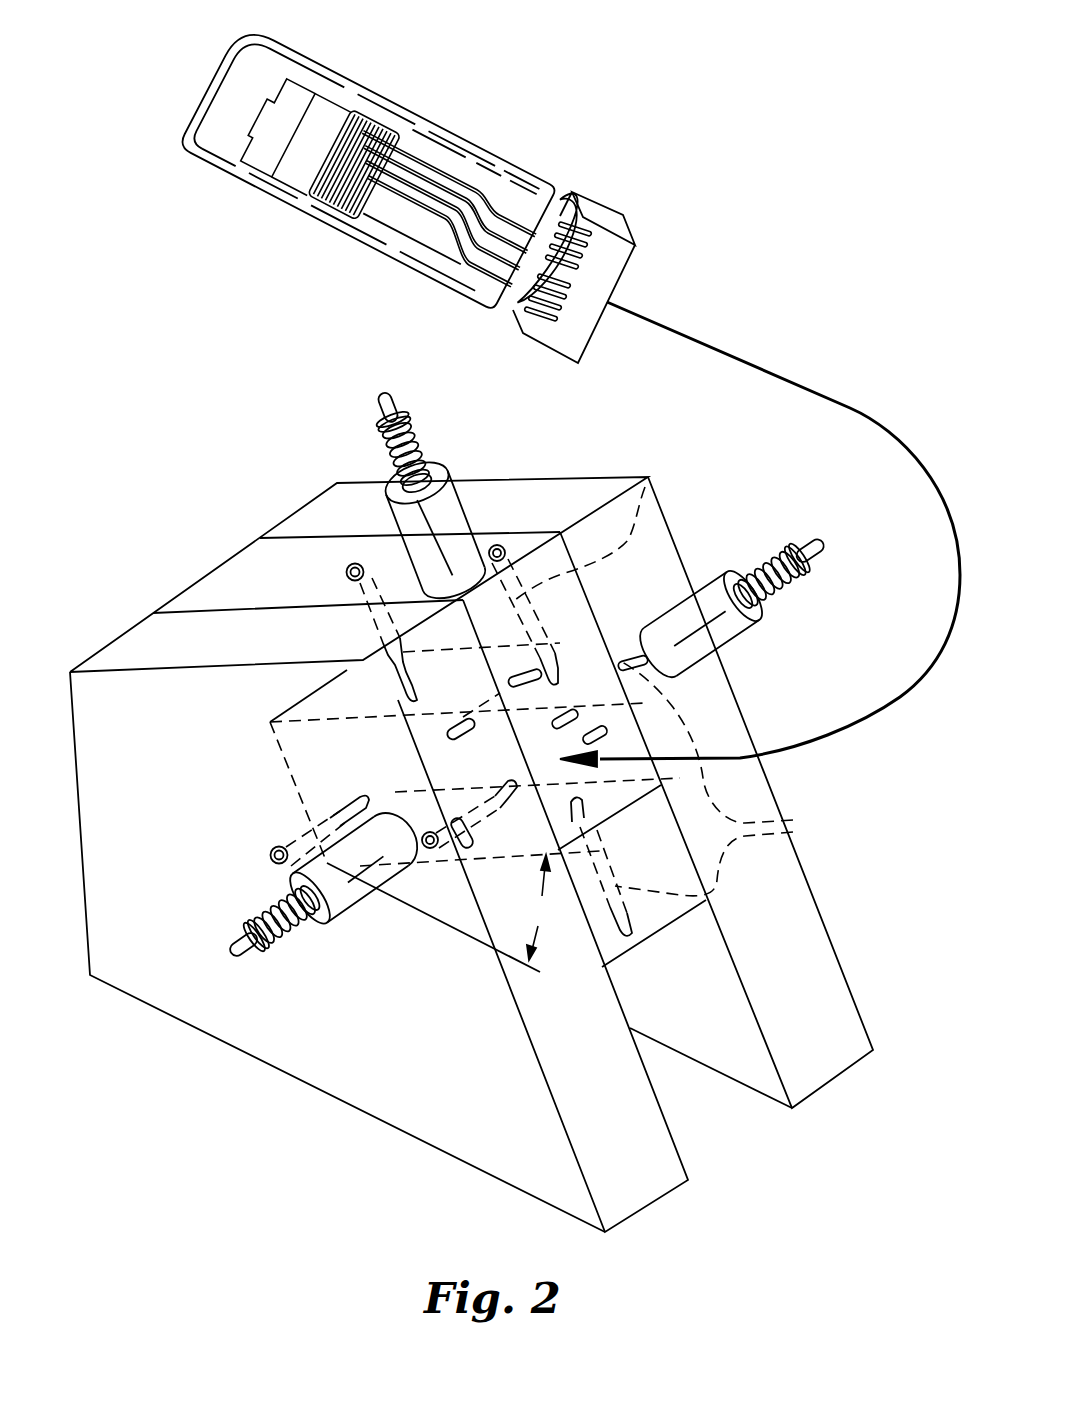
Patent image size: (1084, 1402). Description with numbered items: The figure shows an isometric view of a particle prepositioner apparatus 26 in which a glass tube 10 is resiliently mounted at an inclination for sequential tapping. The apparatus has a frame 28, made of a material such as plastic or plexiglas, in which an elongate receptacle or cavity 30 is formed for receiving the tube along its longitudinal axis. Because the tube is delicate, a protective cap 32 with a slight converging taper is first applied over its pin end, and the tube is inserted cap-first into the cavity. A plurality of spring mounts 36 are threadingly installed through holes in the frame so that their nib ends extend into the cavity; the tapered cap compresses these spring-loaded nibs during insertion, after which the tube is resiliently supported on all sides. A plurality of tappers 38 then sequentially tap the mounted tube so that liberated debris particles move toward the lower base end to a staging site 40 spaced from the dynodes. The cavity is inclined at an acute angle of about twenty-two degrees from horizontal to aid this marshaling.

The tube 10 is at (518, 102).
The apparatus 26 is at (133, 612).
The frame 28 is at (148, 839).
The cavity 30 is at (566, 753).
The protective cap 32 is at (608, 207).
The spring mounts 36 is at (648, 486).
The tappers 38 is at (390, 970).
The staging site 40 is at (472, 290).